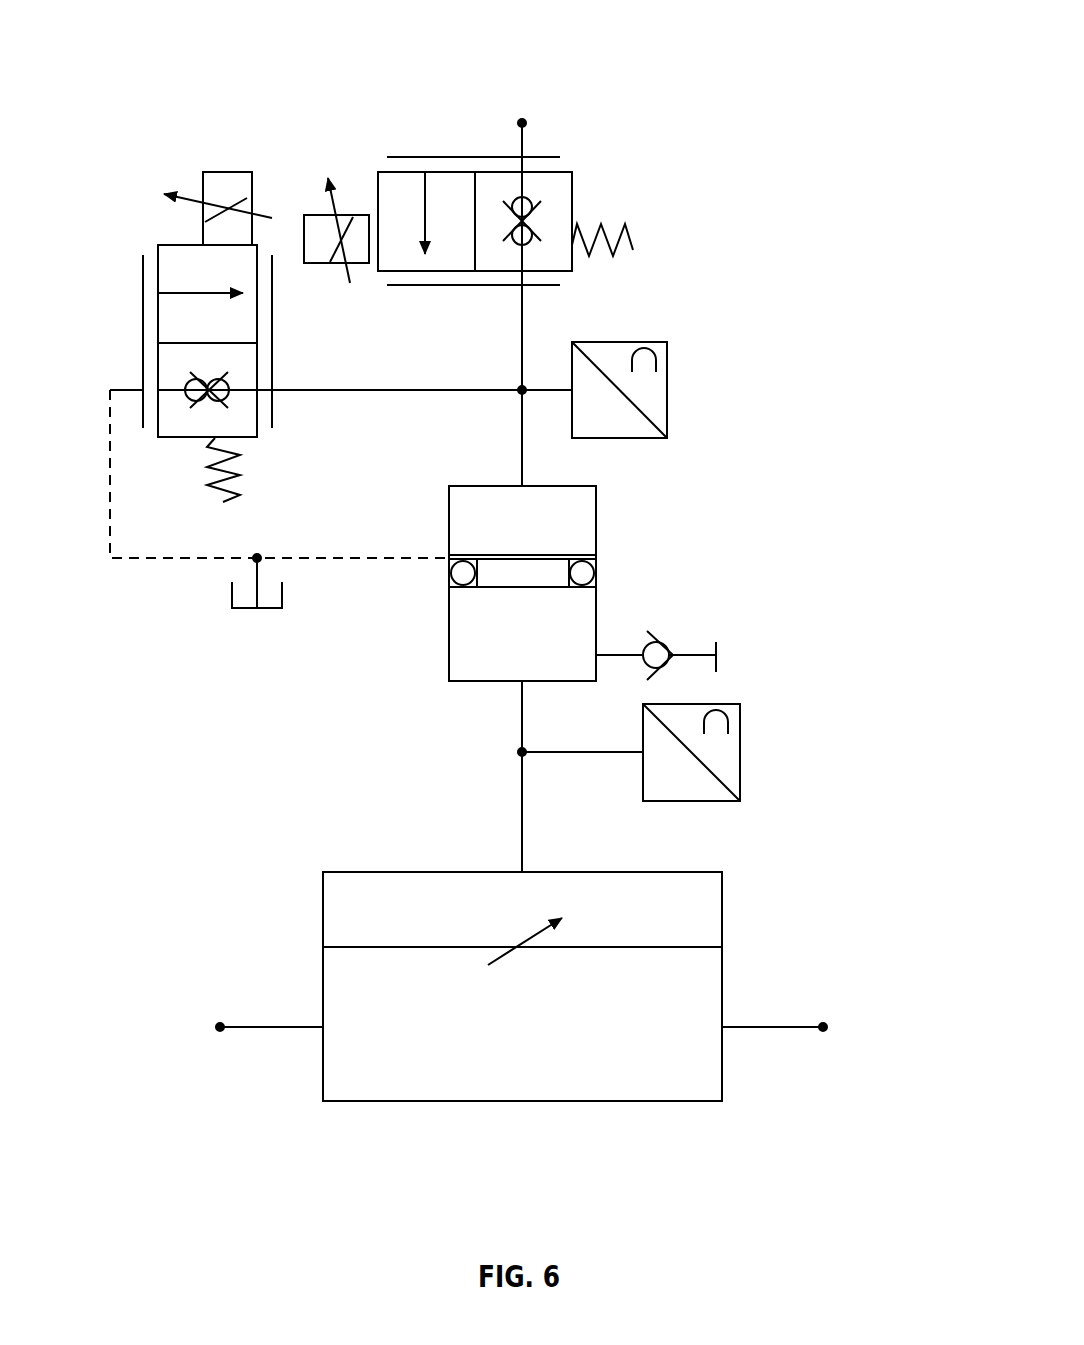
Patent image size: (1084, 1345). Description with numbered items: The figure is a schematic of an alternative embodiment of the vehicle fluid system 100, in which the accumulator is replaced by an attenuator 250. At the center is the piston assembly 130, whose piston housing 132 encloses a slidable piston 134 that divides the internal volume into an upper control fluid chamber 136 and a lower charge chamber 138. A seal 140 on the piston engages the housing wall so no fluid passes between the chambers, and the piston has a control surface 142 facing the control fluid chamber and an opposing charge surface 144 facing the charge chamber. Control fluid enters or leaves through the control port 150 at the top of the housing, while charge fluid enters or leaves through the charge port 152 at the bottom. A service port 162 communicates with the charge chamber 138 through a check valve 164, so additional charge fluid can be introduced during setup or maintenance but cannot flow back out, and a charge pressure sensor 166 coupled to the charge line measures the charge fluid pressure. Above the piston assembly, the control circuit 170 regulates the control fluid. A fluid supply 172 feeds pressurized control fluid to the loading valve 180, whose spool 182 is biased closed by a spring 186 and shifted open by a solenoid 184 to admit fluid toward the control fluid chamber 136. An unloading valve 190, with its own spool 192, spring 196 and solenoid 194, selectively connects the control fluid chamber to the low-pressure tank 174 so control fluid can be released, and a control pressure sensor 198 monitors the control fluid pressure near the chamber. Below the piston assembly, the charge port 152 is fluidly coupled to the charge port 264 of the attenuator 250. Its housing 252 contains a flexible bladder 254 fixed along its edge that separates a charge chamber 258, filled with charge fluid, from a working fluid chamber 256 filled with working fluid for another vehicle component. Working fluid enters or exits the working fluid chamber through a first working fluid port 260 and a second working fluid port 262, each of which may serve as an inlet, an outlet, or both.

The fluid system 100 is at (792, 90).
The piston assembly 130 is at (699, 494).
The piston housing 132 is at (598, 542).
The piston 134 is at (485, 588).
The control fluid chamber 136 is at (454, 499).
The charge chamber 138 is at (463, 647).
The seal 140 is at (590, 568).
The control surface 142 is at (497, 557).
The charge surface 144 is at (505, 588).
The control port 150 is at (523, 485).
The charge port 152 is at (522, 682).
The service port 162 is at (723, 660).
The check valve 164 is at (657, 635).
The charge pressure sensor 166 is at (742, 752).
The control circuit 170 is at (249, 41).
The fluid supply 172 is at (524, 124).
The tank 174 is at (250, 609).
The loading valve 180 is at (707, 199).
The spool 182 is at (574, 184).
The solenoid 184 is at (320, 214).
The spring 186 is at (633, 250).
The unloading valve 190 is at (142, 145).
The spool 192 is at (171, 244).
The solenoid 194 is at (228, 172).
The spring 196 is at (217, 486).
The control pressure sensor 198 is at (668, 373).
The attenuator 250 is at (839, 860).
The housing 252 is at (652, 872).
The bladder 254 is at (710, 947).
The working fluid chamber 256 is at (456, 1082).
The charge chamber 258 is at (355, 894).
The working fluid port 260 is at (221, 1031).
The working fluid port 262 is at (822, 1031).
The charge port 264 is at (523, 871).